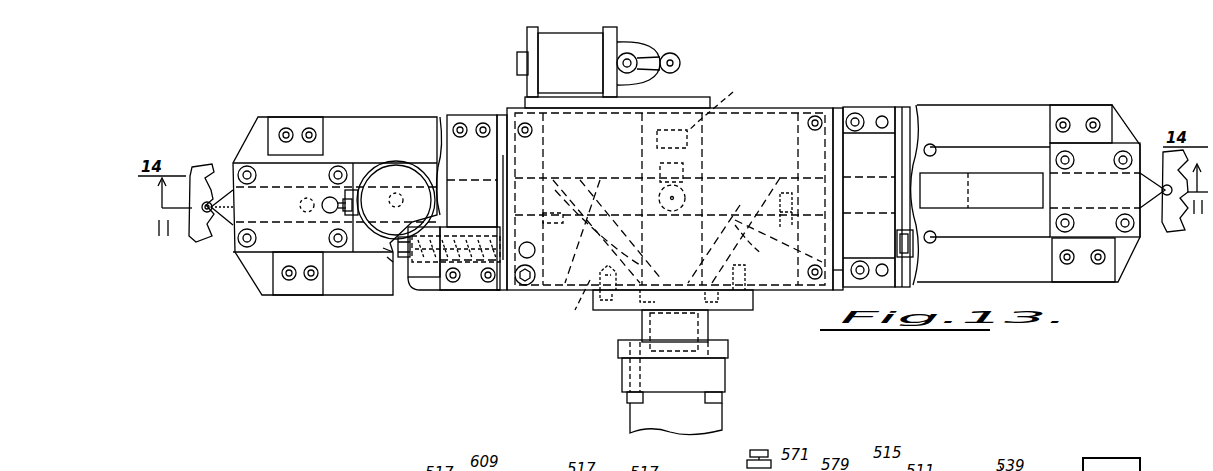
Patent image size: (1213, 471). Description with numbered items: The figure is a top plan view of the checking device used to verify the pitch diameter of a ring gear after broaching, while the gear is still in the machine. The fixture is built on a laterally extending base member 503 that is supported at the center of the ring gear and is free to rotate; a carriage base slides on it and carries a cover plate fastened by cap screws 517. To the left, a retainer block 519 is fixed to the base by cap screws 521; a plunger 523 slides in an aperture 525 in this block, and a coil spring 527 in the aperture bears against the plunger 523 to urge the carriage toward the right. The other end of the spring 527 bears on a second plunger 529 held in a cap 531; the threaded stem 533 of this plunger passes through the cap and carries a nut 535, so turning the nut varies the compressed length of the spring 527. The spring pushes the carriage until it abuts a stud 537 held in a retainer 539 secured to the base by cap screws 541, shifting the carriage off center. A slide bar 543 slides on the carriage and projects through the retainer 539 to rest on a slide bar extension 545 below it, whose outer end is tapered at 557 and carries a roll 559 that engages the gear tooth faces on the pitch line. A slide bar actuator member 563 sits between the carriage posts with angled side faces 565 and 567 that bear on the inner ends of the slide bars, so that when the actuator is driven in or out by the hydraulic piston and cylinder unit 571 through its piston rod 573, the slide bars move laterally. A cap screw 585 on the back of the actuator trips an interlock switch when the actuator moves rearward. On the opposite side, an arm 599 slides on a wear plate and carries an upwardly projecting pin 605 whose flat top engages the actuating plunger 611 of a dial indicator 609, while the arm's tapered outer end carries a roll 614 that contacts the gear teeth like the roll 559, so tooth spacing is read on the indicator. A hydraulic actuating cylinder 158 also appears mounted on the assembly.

The actuating cylinder 158 is at (648, 62).
The base member 503 is at (908, 296).
The cap screws 517 is at (530, 270).
The retainer block 519 is at (473, 282).
The cap screws 521 is at (488, 283).
The plunger 523 is at (504, 292).
The aperture 525 is at (433, 286).
The coil spring 527 is at (475, 216).
The plunger 529 is at (402, 287).
The cap 531 is at (410, 281).
The threaded stem 533 is at (383, 248).
The nut 535 is at (387, 257).
The stud 537 is at (827, 288).
The retainer 539 is at (895, 263).
The cap screws 541 is at (858, 262).
The slide bar 543 is at (824, 170).
The slide bar extension 545 is at (1048, 206).
The tapered end 557 is at (1174, 203).
The roll 559 is at (1163, 190).
The slide bar actuator member 563 is at (764, 244).
The tapered side face 565 is at (578, 306).
The tapered side face 567 is at (742, 274).
The hydraulic piston and cylinder unit 571 is at (710, 420).
The piston rod 573 is at (640, 318).
The cap screw 585 is at (725, 104).
The arm 599 is at (230, 203).
The upwardly projecting pin 605 is at (330, 198).
The dial indicator 609 is at (400, 176).
The actuating plunger 611 is at (343, 212).
The roll 614 is at (200, 240).